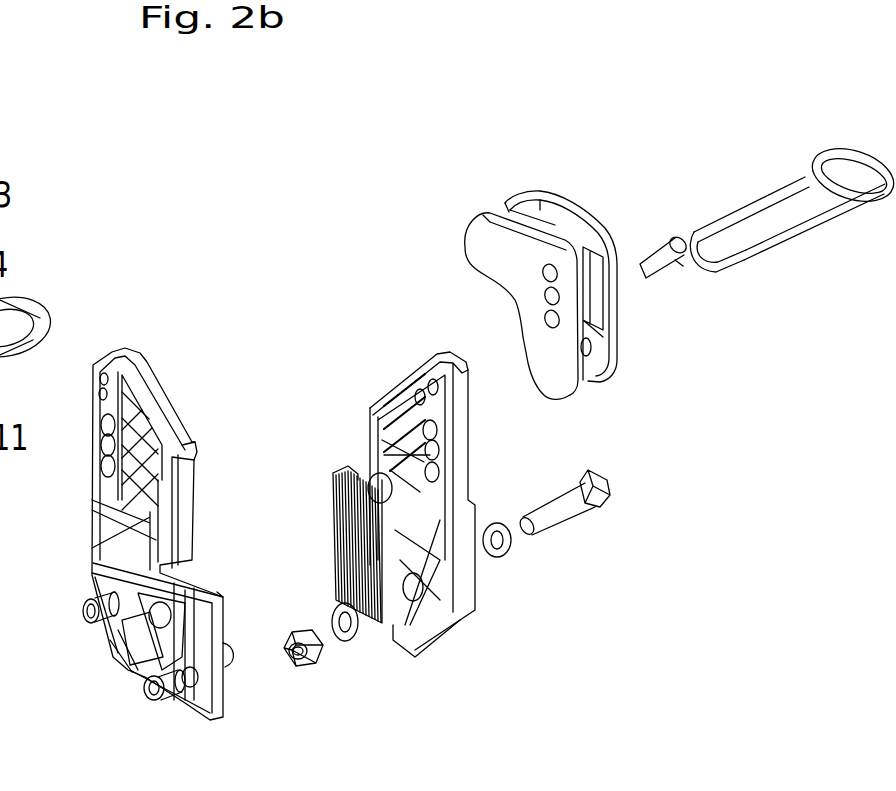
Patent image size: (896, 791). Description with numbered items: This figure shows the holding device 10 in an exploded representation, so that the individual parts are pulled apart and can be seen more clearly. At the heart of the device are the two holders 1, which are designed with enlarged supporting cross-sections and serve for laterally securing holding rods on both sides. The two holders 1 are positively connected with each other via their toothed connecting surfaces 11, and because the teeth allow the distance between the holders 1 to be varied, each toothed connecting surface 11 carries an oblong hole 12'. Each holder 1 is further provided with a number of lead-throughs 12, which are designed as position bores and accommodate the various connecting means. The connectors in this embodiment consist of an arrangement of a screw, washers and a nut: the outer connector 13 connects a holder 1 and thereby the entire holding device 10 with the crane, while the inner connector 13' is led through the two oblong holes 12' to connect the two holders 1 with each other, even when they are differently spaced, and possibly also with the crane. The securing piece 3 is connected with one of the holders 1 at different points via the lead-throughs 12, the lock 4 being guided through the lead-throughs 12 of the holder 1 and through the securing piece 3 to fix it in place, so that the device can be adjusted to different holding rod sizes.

The holding device 10 is at (235, 138).
The holder 1 is at (88, 503).
The toothed connecting surface 11 is at (200, 578).
The lead-through 12 is at (161, 602).
The oblong hole 12' is at (298, 667).
The outer connector 13 is at (306, 602).
The inner connector 13' is at (129, 697).
The securing piece 3 is at (556, 194).
The lock 4 is at (752, 201).